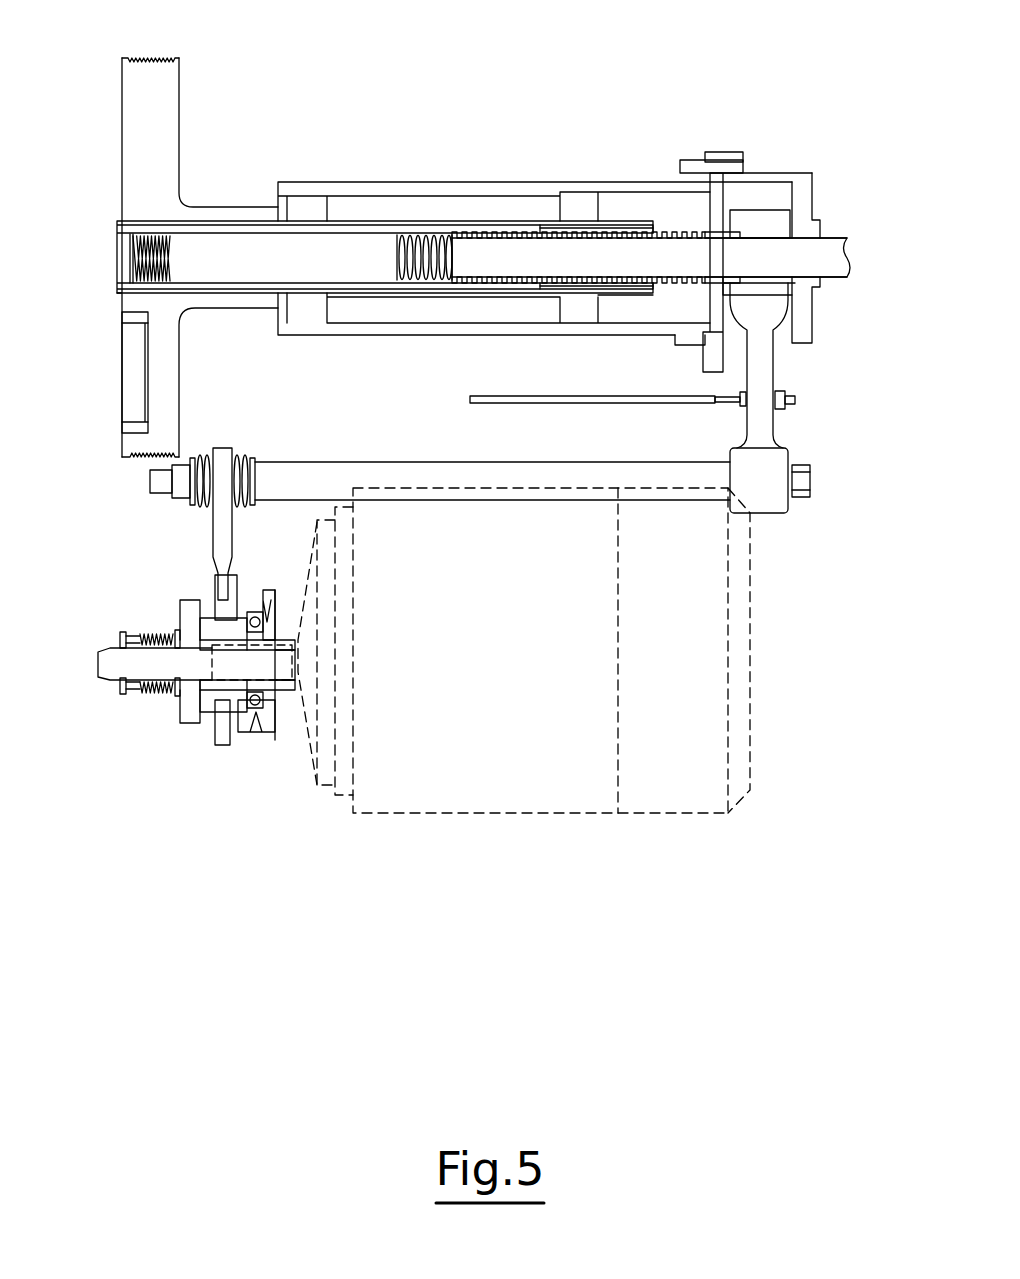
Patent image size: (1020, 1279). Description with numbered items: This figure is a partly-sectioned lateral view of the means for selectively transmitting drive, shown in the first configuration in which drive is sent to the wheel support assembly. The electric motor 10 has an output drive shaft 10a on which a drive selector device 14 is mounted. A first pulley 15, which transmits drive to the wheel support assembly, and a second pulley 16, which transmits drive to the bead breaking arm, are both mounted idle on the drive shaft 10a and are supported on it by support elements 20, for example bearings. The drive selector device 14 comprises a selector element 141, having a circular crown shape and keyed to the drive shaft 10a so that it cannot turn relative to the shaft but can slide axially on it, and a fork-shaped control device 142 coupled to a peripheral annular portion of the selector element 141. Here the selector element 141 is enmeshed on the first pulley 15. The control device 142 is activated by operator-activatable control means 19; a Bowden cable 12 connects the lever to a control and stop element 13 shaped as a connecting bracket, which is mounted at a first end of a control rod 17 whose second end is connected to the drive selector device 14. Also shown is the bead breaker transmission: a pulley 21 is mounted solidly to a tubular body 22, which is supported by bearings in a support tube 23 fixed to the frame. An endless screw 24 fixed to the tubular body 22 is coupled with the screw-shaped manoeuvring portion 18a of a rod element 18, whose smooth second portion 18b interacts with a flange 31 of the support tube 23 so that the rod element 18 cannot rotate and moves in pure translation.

The motor device 10 is at (775, 658).
The output drive shaft 10a is at (233, 693).
The Bowden cable 12 is at (612, 410).
The control and stop element 13 is at (770, 416).
The drive selector device 14 is at (150, 546).
The selector element 141 is at (212, 585).
The control device 142 is at (218, 525).
The first pulley 15 is at (275, 720).
The second pulley 16 is at (175, 706).
The control rod 17 is at (380, 468).
The rod element 18 is at (630, 260).
The screw-shaped manoeuvring portion 18a is at (573, 230).
The second portion 18b is at (831, 235).
The control means 19 is at (822, 377).
The support elements 20 is at (118, 680).
The pulley 21 is at (199, 80).
The tubular body 22 is at (337, 230).
The support tube 23 is at (388, 190).
The endless screw 24 is at (452, 230).
The flange 31 is at (810, 290).